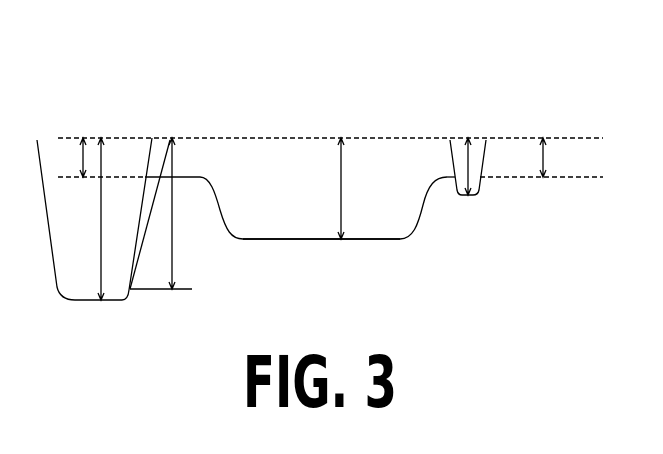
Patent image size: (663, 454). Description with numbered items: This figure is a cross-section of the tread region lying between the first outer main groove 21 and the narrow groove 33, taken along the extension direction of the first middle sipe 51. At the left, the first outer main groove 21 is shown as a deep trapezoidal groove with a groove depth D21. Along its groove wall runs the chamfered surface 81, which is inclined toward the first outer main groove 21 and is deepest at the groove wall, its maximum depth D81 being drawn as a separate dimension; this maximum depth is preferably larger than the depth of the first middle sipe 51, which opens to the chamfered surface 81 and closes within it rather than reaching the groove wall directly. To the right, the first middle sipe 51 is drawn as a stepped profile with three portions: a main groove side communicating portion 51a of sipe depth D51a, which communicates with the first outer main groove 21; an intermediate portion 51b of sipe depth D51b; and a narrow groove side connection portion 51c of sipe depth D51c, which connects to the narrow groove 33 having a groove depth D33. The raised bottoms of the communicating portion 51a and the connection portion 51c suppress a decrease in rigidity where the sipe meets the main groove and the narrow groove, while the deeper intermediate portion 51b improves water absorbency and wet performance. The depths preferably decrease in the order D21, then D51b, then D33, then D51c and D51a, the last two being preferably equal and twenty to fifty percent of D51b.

The first middle sipe 51 is at (362, 80).
The first outer main groove 21 is at (122, 187).
The chamfered surface 81 is at (167, 150).
The main groove side communicating portion 51a is at (175, 158).
The intermediate portion 51b is at (298, 157).
The narrow groove side connection portion 51c is at (453, 175).
The narrow groove 33 is at (478, 140).
The sipe depth of main groove side communicating portion D51a is at (76, 140).
The groove depth of first outer main groove D21 is at (84, 219).
The maximum depth of chamfered surface D81 is at (189, 213).
The sipe depth of intermediate portion D51b is at (363, 188).
The groove depth of narrow groove D33 is at (469, 160).
The sipe depth of narrow groove side connection portion D51c is at (565, 157).